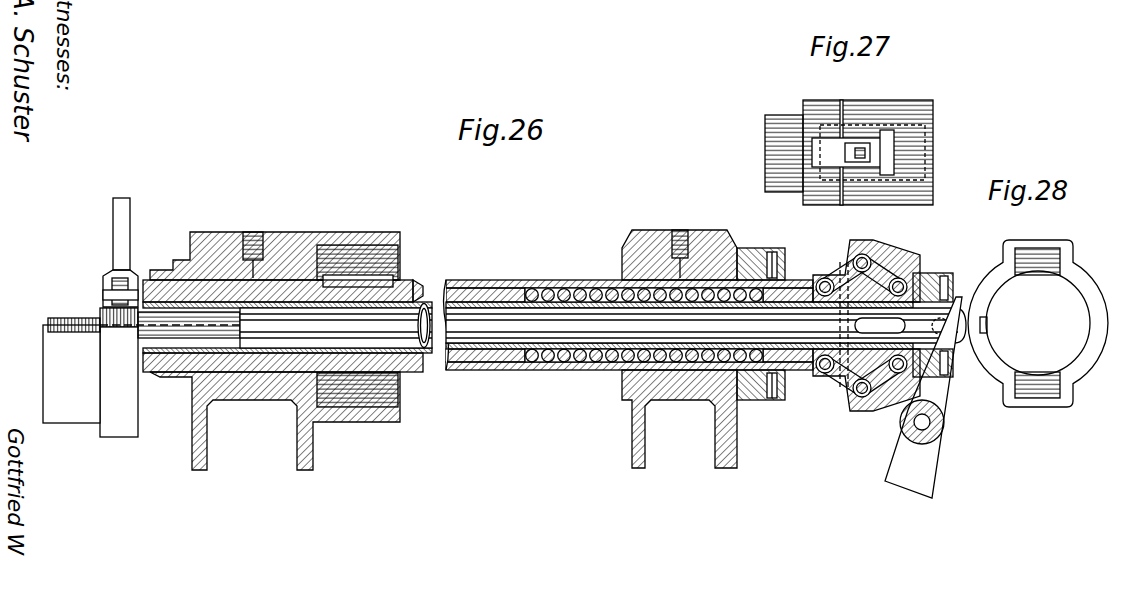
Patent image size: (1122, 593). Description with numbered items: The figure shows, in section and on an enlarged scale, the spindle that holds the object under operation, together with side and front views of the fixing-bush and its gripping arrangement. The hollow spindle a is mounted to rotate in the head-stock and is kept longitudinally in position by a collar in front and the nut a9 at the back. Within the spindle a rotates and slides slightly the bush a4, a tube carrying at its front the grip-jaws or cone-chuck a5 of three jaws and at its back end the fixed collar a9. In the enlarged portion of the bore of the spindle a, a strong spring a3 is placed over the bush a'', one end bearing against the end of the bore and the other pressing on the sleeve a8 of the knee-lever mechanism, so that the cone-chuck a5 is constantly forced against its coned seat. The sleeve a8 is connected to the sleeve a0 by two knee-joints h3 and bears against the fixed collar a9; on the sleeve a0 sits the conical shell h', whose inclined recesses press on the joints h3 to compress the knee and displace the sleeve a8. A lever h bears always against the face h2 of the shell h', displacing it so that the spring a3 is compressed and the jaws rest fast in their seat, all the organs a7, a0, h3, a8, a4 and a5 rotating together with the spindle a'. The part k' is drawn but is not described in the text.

In FIG. 26, the hollow spindle a is at (679, 354).
In FIG. 26, the spindle a' is at (706, 325).
In FIG. 26, the bush a'' is at (629, 315).
In FIG. 26, the spring a3 is at (585, 288).
In FIG. 26, the bush a4 is at (428, 304).
In FIG. 26, the cone-chuck a5 is at (163, 376).
In FIG. 26, the end collar a7 is at (945, 290).
In FIG. 26, the sleeve a8 is at (796, 283).
In FIG. 27, the sleeve a8 is at (837, 152).
In FIG. 26, the nut a9 is at (768, 400).
In FIG. 27, the sleeve a0 is at (920, 112).
In FIG. 26, the lever h is at (923, 397).
In FIG. 28, the conical shell h' is at (1038, 347).
In FIG. 26, the face h2 is at (915, 275).
In FIG. 26, the knee-joint h3 is at (850, 392).
In FIG. 26, the link pin k' is at (861, 345).